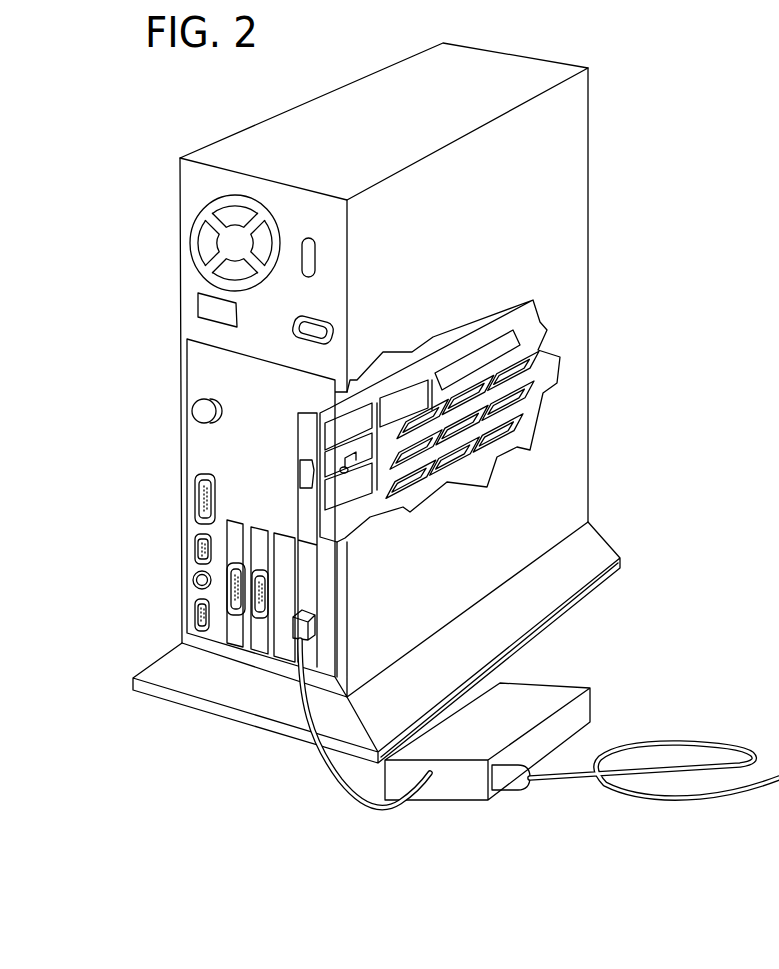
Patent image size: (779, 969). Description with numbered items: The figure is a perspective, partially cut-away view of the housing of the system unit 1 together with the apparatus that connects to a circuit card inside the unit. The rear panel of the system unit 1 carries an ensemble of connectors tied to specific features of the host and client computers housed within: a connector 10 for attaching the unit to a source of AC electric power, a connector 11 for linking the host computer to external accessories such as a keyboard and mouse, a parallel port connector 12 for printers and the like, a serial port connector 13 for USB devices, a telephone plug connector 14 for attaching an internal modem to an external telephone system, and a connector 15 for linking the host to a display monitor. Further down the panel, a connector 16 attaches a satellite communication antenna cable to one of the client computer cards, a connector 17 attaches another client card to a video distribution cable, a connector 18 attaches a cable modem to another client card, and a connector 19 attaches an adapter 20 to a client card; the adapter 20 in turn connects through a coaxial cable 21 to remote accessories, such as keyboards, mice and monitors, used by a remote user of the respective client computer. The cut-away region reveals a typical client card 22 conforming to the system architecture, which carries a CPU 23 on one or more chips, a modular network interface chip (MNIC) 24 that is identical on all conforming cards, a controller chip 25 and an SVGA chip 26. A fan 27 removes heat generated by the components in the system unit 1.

The system unit 1 is at (386, 135).
The connector 10 is at (218, 300).
The connector 11 is at (193, 406).
The parallel port connector 12 is at (192, 480).
The serial port connector 13 is at (197, 540).
The telephone plug connector 14 is at (194, 578).
The connector 15 is at (196, 607).
The connector 16 is at (233, 623).
The connector 17 is at (281, 633).
The connector 18 is at (260, 635).
The connector 19 is at (318, 624).
The adapter 20 is at (592, 693).
The coaxial cable 21 is at (693, 740).
The client card 22 is at (530, 366).
The CPU 23 is at (553, 299).
The modular network interface chip (MNIC) 24 is at (377, 477).
The controller chip 25 is at (412, 380).
The SVGA chip 26 is at (367, 408).
The fan 27 is at (226, 234).